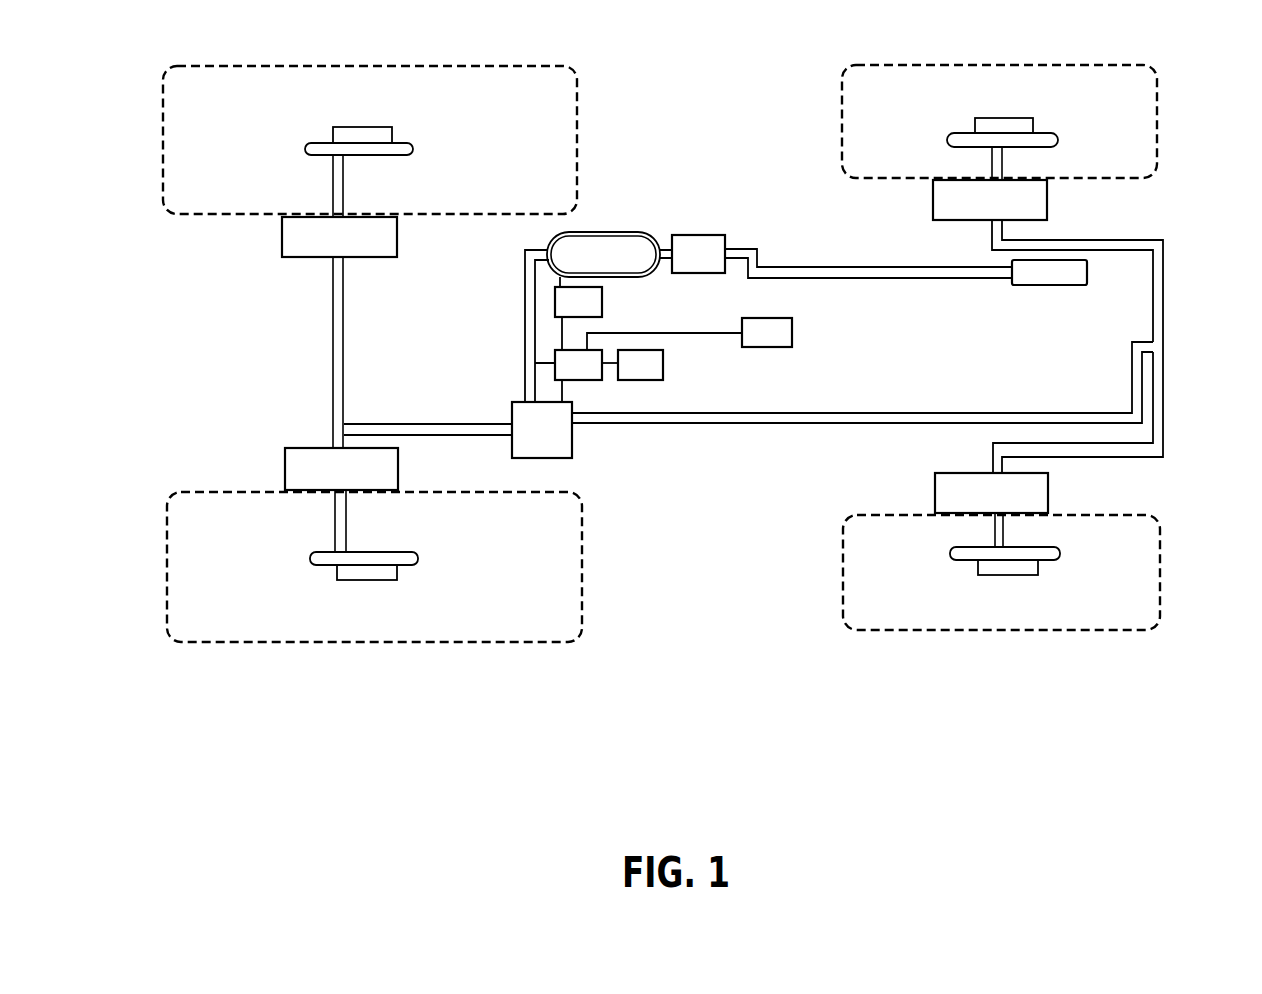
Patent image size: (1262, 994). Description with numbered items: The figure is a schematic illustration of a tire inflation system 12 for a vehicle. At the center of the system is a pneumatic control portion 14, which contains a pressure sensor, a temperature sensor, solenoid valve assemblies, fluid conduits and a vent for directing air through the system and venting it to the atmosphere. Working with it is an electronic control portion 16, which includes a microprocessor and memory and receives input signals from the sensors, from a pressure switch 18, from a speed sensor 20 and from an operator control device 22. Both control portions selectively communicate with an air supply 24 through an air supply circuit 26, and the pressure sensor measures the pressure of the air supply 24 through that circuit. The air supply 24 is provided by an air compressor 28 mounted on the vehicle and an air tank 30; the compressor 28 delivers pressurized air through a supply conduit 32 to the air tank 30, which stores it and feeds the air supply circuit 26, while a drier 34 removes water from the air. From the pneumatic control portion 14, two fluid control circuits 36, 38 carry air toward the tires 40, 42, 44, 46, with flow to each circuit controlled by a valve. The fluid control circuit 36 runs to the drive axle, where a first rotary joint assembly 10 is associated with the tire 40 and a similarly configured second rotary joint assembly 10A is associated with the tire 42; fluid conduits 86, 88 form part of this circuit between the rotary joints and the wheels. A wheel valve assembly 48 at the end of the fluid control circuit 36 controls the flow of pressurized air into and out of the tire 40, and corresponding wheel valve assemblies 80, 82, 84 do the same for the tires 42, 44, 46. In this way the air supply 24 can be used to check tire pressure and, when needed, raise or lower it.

The rotary joint assembly 10 is at (356, 485).
The second rotary joint assembly 10A is at (360, 252).
The tire inflation system 12 is at (1184, 220).
The pneumatic control portion 14 is at (556, 444).
The electronic control portion 16 is at (592, 377).
The pressure switch 18 is at (592, 314).
The speed sensor 20 is at (654, 377).
The operator control device 22 is at (781, 345).
The air supply 24 is at (731, 222).
The air supply circuit 26 is at (527, 328).
The air compressor 28 is at (1063, 284).
The air tank 30 is at (616, 268).
The supply conduit 32 is at (788, 267).
The drier 34 is at (714, 268).
The fluid control circuit 36 is at (427, 424).
The fluid control circuit 38 is at (742, 425).
The tire 40 is at (234, 590).
The tire 42 is at (228, 159).
The tire 44 is at (898, 592).
The tire 46 is at (891, 132).
The wheel valve assembly 48 is at (417, 563).
The wheel valve assembly 80 is at (413, 150).
The wheel valve assembly 82 is at (1057, 558).
The wheel valve assembly 84 is at (1057, 138).
The fluid conduit 86 is at (333, 447).
The fluid conduit 88 is at (331, 302).